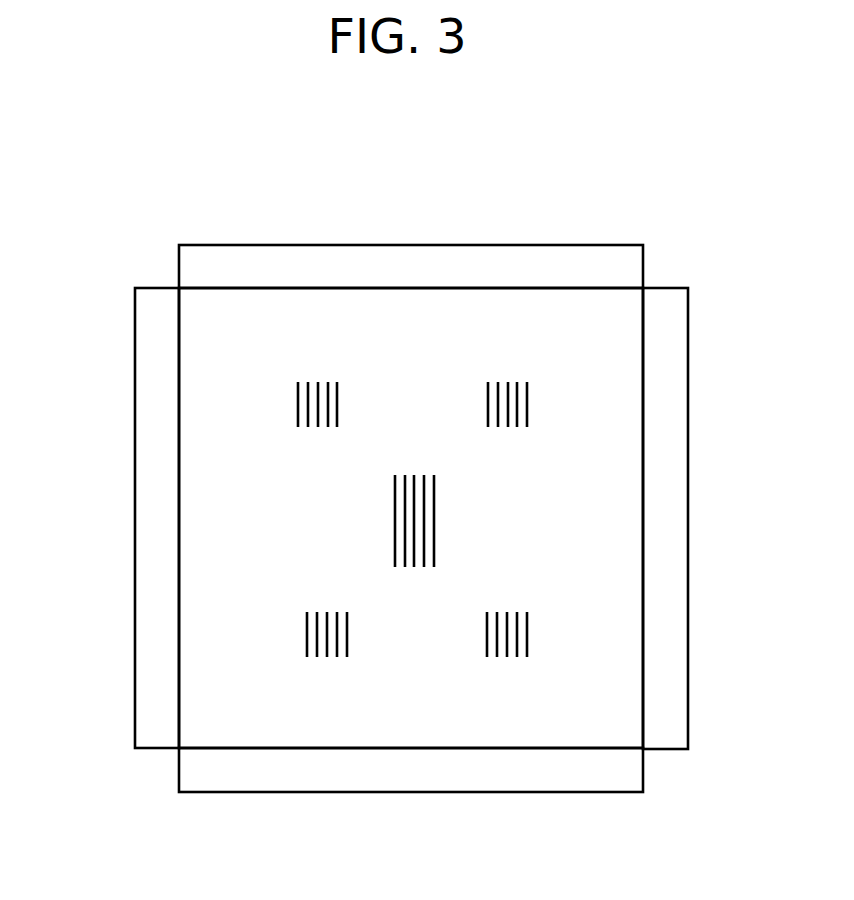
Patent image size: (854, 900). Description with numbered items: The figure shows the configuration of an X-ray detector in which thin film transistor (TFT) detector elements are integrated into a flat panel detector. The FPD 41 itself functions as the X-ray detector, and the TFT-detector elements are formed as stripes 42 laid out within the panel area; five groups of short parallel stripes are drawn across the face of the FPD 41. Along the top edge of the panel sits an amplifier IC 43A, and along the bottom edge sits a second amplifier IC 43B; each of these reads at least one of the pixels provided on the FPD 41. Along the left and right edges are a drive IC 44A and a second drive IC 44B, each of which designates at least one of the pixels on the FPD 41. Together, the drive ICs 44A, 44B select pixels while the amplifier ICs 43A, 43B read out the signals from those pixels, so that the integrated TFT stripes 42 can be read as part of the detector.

The FPD 41 is at (575, 319).
The stripes 42 is at (337, 382).
The amplifier IC 43A is at (310, 245).
The second amplifier IC 43B is at (510, 794).
The drive IC 44A is at (688, 422).
The second drive IC 44B is at (135, 418).